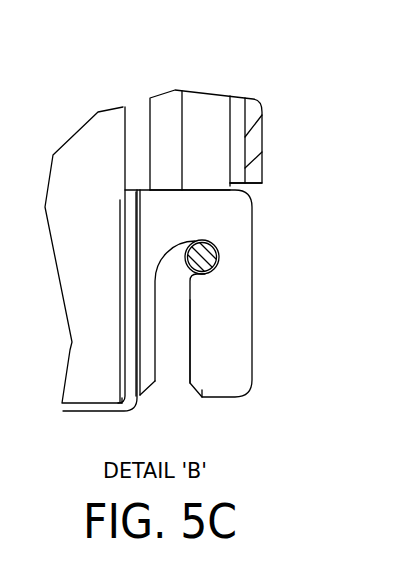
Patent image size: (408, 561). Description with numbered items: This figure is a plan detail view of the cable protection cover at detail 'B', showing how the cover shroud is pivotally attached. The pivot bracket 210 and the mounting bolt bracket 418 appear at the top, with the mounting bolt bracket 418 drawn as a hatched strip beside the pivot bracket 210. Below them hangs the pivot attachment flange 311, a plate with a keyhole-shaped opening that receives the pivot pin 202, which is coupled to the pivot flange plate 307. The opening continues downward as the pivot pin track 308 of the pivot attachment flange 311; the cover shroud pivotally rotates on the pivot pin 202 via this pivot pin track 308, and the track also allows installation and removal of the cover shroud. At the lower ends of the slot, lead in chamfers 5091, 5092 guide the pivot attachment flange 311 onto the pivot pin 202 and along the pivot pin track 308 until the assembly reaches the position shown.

The pivot bracket 210 is at (203, 102).
The mounting bolt bracket 418 is at (262, 146).
The pivot attachment flange 311 is at (264, 250).
The pivot pin 202 is at (216, 264).
The pivot flange plate 307 is at (165, 285).
The pivot pin track 308 is at (192, 378).
The lead in chamfer 5091 is at (154, 387).
The lead in chamfer 5092 is at (197, 390).